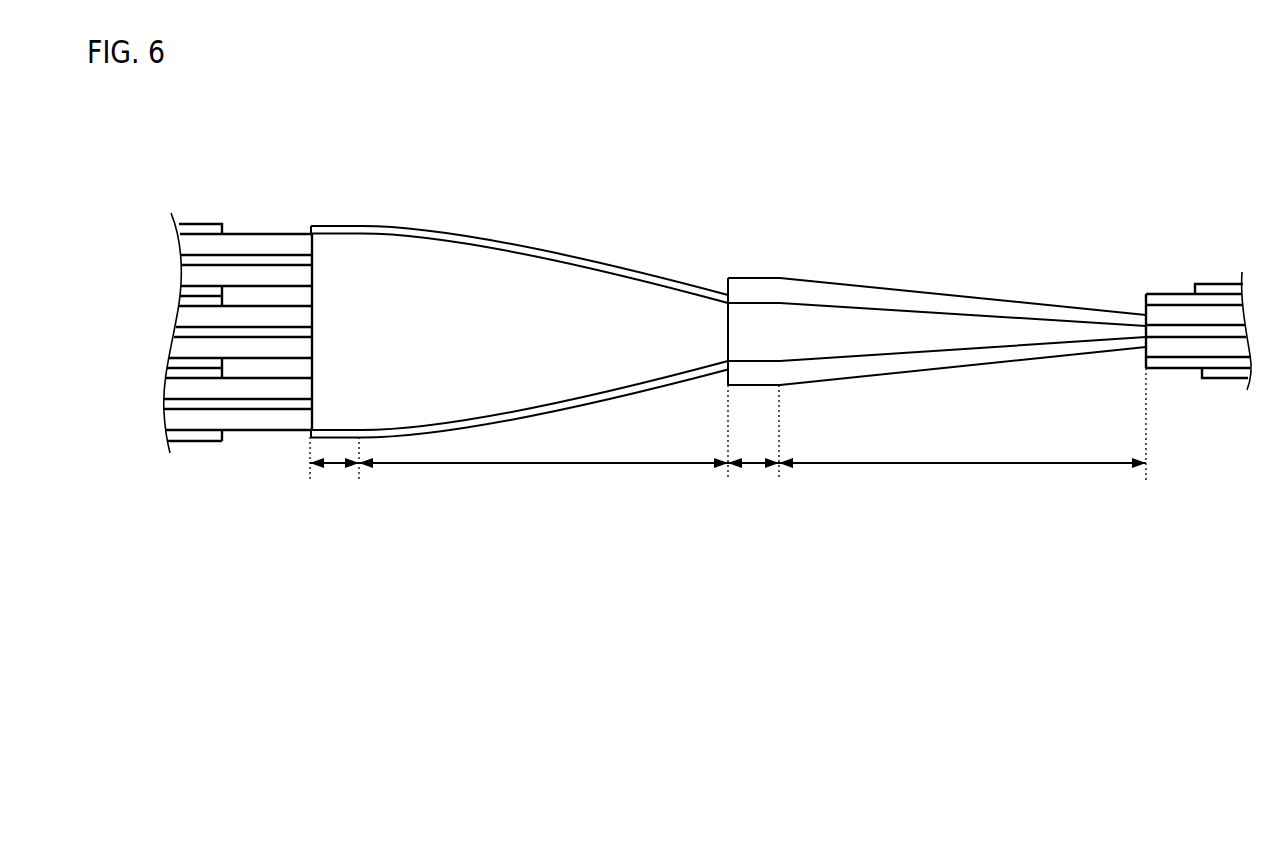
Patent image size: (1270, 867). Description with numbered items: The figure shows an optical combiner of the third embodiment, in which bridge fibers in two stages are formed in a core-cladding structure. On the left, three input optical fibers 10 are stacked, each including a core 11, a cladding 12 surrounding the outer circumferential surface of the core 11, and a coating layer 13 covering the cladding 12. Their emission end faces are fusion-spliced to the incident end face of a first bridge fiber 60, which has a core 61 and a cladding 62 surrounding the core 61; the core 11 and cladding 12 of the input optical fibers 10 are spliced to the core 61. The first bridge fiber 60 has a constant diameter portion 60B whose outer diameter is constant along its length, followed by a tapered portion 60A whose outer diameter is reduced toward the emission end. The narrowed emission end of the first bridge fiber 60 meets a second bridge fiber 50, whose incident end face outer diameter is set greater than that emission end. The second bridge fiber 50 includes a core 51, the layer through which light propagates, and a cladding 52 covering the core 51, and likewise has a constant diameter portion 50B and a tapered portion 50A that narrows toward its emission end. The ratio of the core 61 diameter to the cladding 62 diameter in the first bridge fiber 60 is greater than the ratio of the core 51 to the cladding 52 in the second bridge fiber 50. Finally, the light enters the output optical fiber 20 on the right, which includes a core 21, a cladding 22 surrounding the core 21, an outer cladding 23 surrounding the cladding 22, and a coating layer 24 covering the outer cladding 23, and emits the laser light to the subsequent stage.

The input optical fiber 10 is at (202, 300).
The core 11 is at (277, 258).
The cladding 12 is at (239, 243).
The coating layer 13 is at (200, 229).
The output optical fiber 20 is at (1198, 340).
The core 21 is at (1155, 330).
The cladding 22 is at (1180, 313).
The outer cladding 23 is at (1208, 297).
The coating layer 24 is at (1234, 287).
The second bridge fiber 50 is at (937, 294).
The core 51 is at (937, 322).
The cladding 52 is at (895, 297).
The tapered portion 50A is at (958, 467).
The constant diameter portion 50B is at (754, 467).
The first bridge fiber 60 is at (519, 295).
The core 61 is at (534, 268).
The cladding 62 is at (493, 243).
The tapered portion 60A is at (541, 467).
The constant diameter portion 60B is at (336, 467).